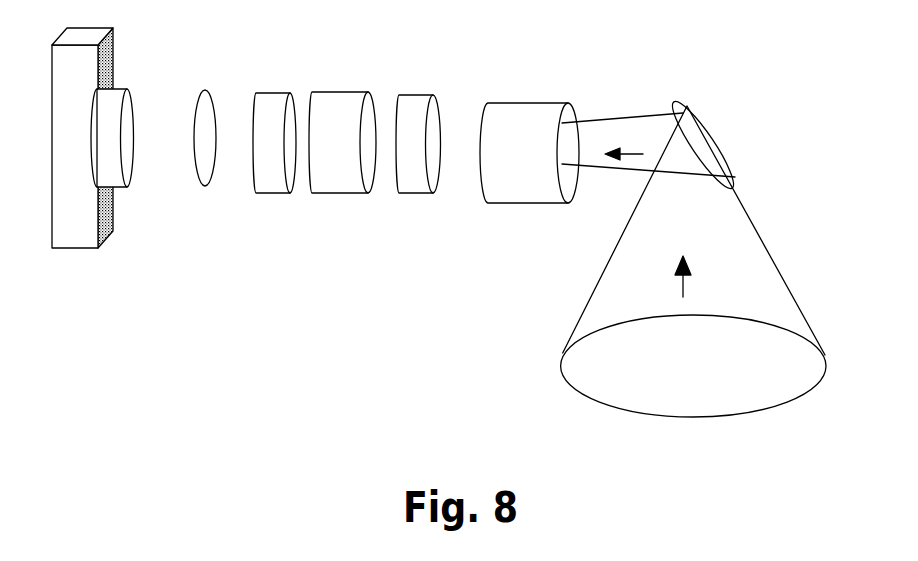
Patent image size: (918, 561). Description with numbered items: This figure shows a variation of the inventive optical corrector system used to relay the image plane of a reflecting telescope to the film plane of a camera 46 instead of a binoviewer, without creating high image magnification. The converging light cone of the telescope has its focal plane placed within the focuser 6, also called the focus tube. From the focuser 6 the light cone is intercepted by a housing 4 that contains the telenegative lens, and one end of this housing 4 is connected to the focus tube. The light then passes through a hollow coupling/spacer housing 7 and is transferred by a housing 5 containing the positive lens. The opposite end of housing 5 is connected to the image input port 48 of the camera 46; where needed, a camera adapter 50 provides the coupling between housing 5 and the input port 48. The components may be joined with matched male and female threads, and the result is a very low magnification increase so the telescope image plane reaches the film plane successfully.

The camera 46 is at (80, 243).
The image input port 48 is at (120, 187).
The camera adapter 50 is at (195, 177).
The housing 5 is at (272, 190).
The hollow coupling/spacer housing 7 is at (348, 188).
The housing 4 is at (415, 192).
The focuser 6 is at (527, 203).